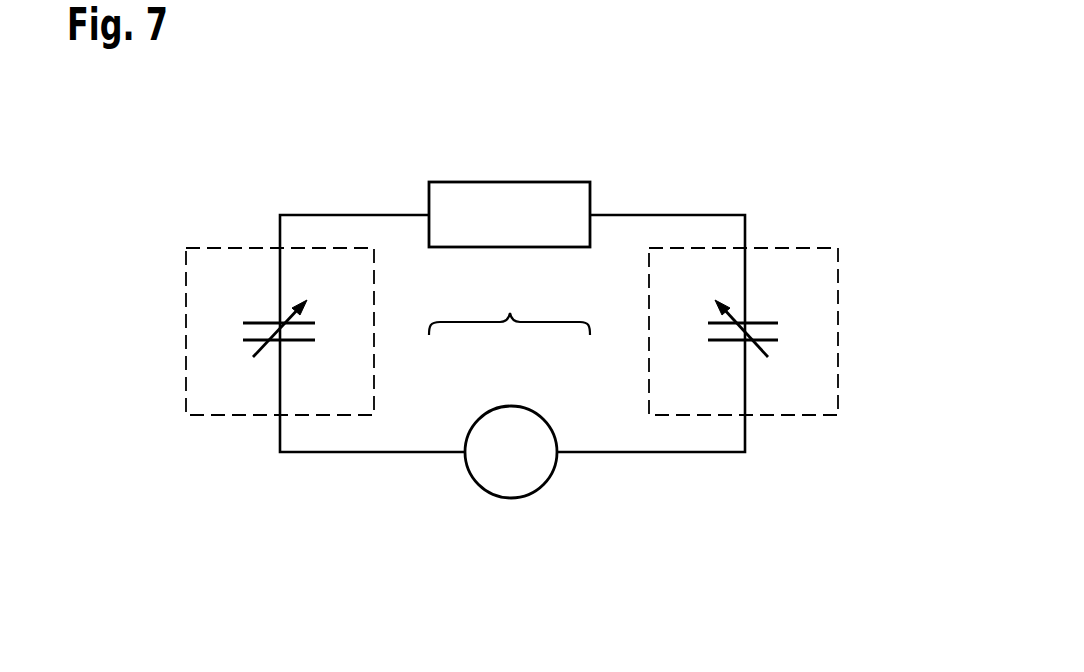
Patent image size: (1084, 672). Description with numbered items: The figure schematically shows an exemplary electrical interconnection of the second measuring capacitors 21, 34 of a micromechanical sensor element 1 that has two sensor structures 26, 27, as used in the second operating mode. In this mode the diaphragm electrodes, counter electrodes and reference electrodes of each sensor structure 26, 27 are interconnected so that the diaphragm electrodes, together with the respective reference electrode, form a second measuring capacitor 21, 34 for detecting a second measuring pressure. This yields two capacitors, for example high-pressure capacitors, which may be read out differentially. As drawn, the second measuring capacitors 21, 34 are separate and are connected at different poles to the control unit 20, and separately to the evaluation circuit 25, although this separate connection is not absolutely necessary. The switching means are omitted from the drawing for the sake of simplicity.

The micromechanical sensor element 1 is at (510, 312).
The control unit 20 is at (543, 485).
The second measuring capacitor 21 is at (263, 322).
The evaluation circuit 25 is at (509, 182).
The sensor structure 26 is at (374, 355).
The sensor structure 27 is at (649, 355).
The second measuring capacitor 34 is at (763, 322).